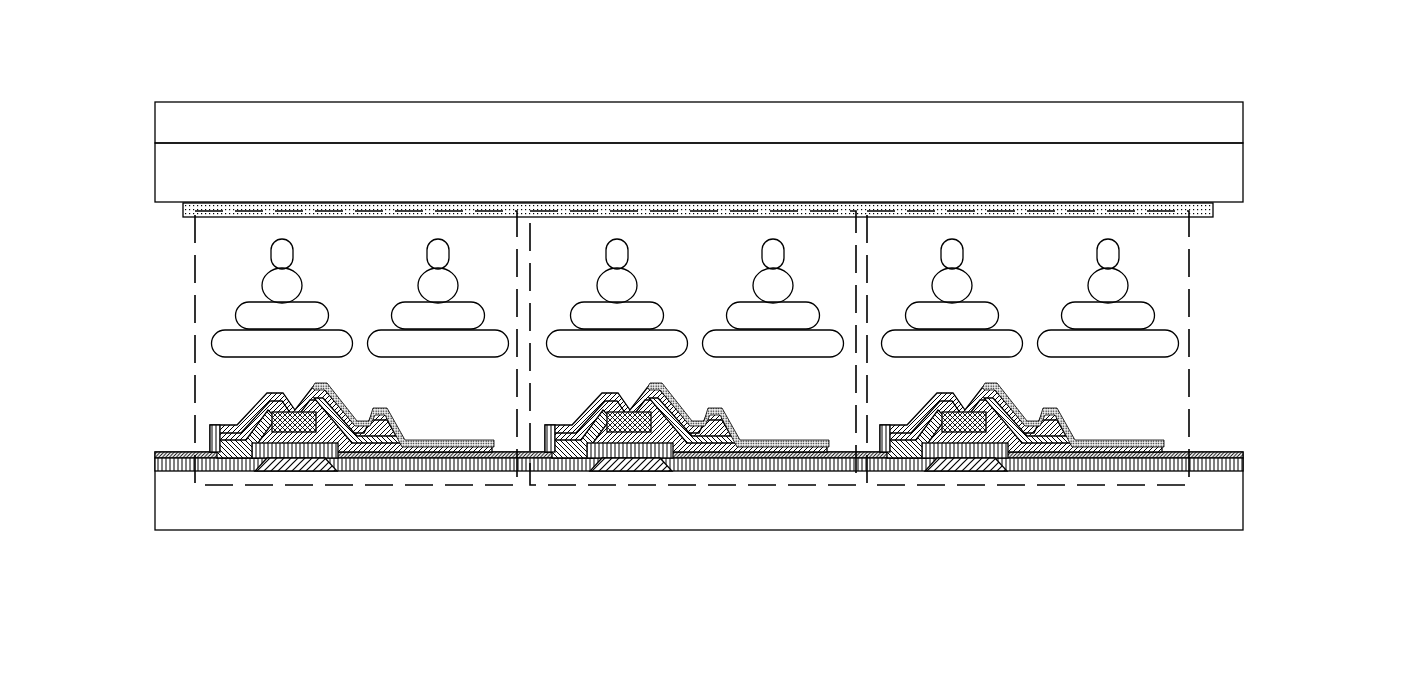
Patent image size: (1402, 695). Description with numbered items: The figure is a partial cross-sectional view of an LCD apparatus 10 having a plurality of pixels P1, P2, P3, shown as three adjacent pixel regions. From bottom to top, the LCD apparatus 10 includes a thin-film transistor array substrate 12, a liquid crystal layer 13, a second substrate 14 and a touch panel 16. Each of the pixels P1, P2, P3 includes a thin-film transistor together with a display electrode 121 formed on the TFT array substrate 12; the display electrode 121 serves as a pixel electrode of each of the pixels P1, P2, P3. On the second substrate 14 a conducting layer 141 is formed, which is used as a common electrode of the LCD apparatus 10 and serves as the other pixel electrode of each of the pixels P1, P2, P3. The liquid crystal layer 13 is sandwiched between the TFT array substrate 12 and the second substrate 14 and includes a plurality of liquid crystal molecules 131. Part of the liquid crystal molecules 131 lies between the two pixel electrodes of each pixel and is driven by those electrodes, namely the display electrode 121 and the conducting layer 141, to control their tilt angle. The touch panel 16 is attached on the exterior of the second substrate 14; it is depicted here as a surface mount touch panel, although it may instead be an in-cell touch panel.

The LCD apparatus 10 is at (765, 52).
The thin-film transistor array substrate 12 is at (773, 456).
The display electrode 121 is at (1157, 445).
The liquid crystal layer 13 is at (780, 299).
The liquid crystal molecules 131 is at (1177, 343).
The second substrate 14 is at (767, 177).
The conducting layer 141 is at (1213, 213).
The touch panel 16 is at (1235, 121).
The pixel P1 is at (333, 485).
The pixel P2 is at (671, 485).
The pixel P3 is at (1006, 485).